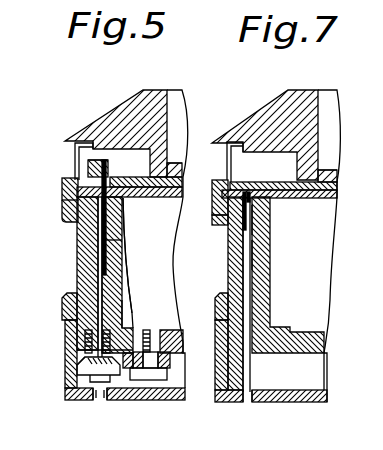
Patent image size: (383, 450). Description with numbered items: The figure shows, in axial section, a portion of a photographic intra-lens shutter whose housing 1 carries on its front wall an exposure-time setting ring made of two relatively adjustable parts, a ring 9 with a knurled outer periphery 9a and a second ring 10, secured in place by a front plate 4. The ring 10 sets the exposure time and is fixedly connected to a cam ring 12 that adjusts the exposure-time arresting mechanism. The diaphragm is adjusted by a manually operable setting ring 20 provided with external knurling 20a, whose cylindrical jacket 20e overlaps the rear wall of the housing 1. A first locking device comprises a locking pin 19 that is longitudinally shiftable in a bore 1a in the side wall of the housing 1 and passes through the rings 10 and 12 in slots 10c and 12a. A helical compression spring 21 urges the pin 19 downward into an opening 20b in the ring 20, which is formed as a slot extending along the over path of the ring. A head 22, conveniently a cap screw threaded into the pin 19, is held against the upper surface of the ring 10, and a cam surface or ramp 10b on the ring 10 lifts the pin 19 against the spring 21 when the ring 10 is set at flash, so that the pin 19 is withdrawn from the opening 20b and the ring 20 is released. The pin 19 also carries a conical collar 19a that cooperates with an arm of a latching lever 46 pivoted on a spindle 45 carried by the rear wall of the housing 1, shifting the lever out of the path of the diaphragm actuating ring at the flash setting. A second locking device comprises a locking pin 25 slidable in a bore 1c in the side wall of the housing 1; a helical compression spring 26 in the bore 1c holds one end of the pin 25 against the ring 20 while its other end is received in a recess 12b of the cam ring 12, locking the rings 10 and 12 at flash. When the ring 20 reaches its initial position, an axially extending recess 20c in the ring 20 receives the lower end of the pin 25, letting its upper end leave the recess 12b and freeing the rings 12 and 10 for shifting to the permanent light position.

In FIG. 5, the shutter housing 1 is at (115, 275).
In FIG. 7, the shutter housing 1 is at (263, 290).
In FIG. 5, the bore 1a is at (108, 248).
In FIG. 7, the bore 1c is at (255, 228).
In FIG. 5, the front plate 4 is at (137, 105).
In FIG. 7, the front plate 4 is at (265, 115).
In FIG. 5, the ring 9 is at (64, 188).
In FIG. 7, the ring 9 is at (222, 212).
In FIG. 5, the knurled outer periphery 9a is at (63, 210).
In FIG. 7, the knurled outer periphery 9a is at (212, 226).
In FIG. 5, the ring 10 is at (75, 153).
In FIG. 7, the ring 10 is at (227, 165).
In FIG. 5, the cam surface or ramp 10b is at (110, 170).
In FIG. 5, the slot 10c is at (112, 177).
In FIG. 5, the cam ring 12 is at (147, 197).
In FIG. 7, the cam ring 12 is at (308, 199).
In FIG. 5, the slot 12a is at (123, 230).
In FIG. 7, the opening or recess 12b is at (257, 183).
In FIG. 5, the locking pin 19 is at (100, 267).
In FIG. 5, the conical collar 19a is at (88, 363).
In FIG. 5, the manually operable setting ring 20 is at (63, 396).
In FIG. 7, the manually operable setting ring 20 is at (296, 398).
In FIG. 5, the external knurling 20a is at (62, 308).
In FIG. 7, the external knurling 20a is at (215, 307).
In FIG. 5, the opening or recess 20b is at (103, 400).
In FIG. 7, the axially extending recess 20c is at (245, 403).
In FIG. 5, the cylindrical jacket 20e is at (65, 342).
In FIG. 7, the cylindrical jacket 20e is at (216, 353).
In FIG. 5, the helical compression spring 21 is at (127, 317).
In FIG. 5, the head 22 is at (107, 157).
In FIG. 7, the locking pin 25 is at (255, 258).
In FIG. 7, the helical compression spring 26 is at (252, 206).
In FIG. 5, the spindle 45 is at (153, 380).
In FIG. 5, the latching lever 46 is at (133, 352).